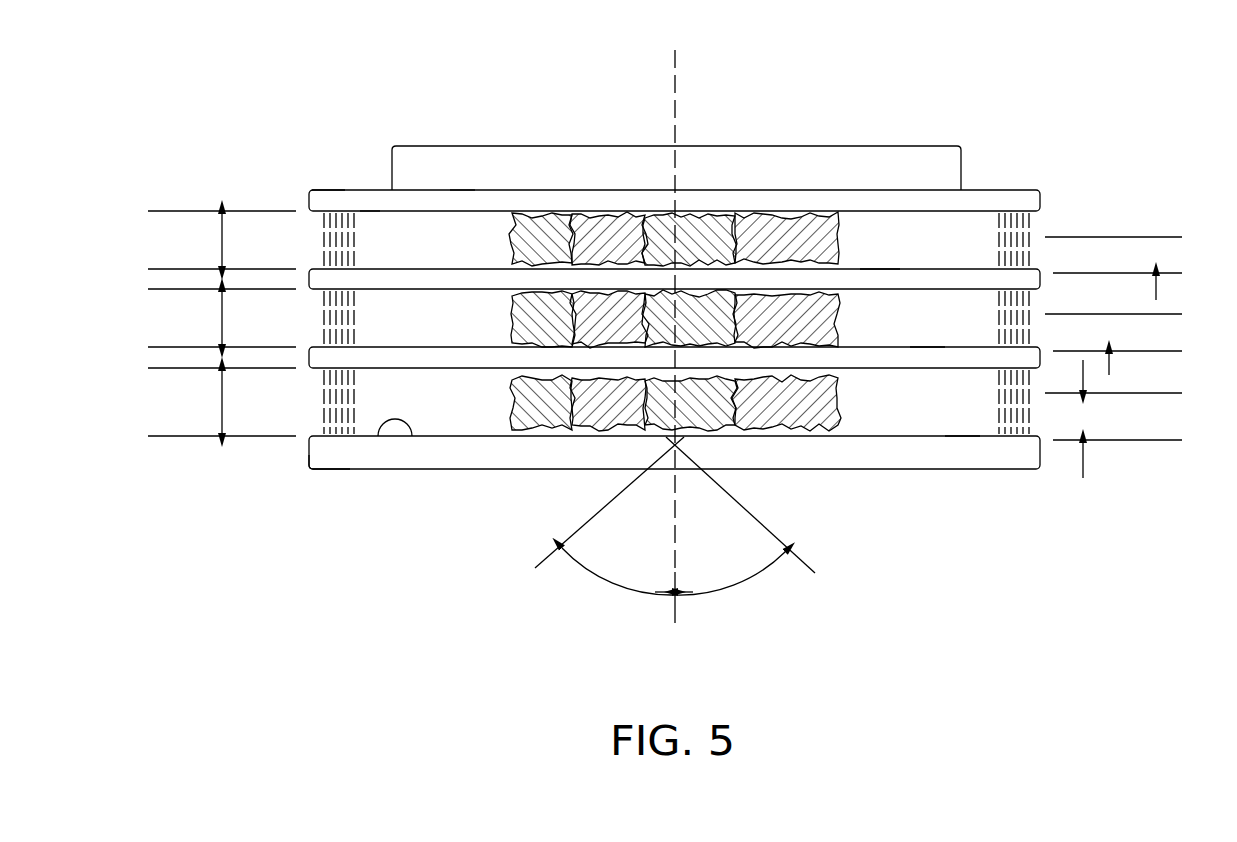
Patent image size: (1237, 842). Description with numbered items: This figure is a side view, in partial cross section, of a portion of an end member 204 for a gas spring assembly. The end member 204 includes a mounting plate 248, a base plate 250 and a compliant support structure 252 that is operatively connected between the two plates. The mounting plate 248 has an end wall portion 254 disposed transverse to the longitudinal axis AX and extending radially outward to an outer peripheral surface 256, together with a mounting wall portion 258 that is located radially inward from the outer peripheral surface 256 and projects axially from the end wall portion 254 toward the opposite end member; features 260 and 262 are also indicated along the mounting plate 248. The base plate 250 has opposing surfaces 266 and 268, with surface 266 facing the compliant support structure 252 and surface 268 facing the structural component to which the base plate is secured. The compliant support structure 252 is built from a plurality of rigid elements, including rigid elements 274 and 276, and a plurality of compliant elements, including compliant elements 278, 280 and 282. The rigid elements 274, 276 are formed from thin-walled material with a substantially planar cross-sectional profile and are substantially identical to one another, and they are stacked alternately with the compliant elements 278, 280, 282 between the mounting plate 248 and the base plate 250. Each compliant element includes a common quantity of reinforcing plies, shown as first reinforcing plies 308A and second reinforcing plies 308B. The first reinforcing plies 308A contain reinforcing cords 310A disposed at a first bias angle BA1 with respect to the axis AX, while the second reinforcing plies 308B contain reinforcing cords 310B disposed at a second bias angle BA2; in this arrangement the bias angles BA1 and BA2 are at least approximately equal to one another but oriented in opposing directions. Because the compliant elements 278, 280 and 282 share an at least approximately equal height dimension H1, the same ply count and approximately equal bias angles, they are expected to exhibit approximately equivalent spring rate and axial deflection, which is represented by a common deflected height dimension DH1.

The end member 204 is at (1020, 128).
The mounting plate 248 is at (1013, 196).
The base plate 250 is at (1015, 469).
The compliant support structure 252 is at (1050, 220).
The end wall portion 254 is at (462, 190).
The outer peripheral surface 256 is at (418, 203).
The mounting wall portion 258 is at (515, 165).
The left end of top plate 260 is at (340, 190).
The lower surface of top plate 262 is at (368, 209).
The surface 266 is at (412, 436).
The surface 268 is at (348, 469).
The rigid element 274 is at (473, 286).
The rigid element 276 is at (437, 366).
The compliant element 278 is at (878, 264).
The compliant element 280 is at (926, 345).
The compliant element 282 is at (960, 432).
The first reinforcing plies 308A is at (545, 218).
The second reinforcing plies 308B is at (608, 220).
The reinforcing cords 310A is at (575, 416).
The reinforcing cords 310B is at (790, 416).
The height dimension H1 is at (222, 238).
The deflected height dimension DH1 is at (1156, 234).
The first bias angle BA1 is at (612, 580).
The second bias angle BA2 is at (753, 578).
The longitudinal axis AX is at (676, 614).